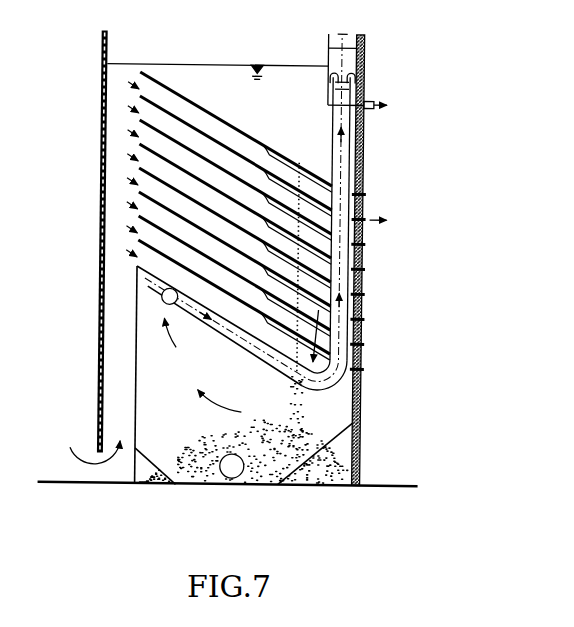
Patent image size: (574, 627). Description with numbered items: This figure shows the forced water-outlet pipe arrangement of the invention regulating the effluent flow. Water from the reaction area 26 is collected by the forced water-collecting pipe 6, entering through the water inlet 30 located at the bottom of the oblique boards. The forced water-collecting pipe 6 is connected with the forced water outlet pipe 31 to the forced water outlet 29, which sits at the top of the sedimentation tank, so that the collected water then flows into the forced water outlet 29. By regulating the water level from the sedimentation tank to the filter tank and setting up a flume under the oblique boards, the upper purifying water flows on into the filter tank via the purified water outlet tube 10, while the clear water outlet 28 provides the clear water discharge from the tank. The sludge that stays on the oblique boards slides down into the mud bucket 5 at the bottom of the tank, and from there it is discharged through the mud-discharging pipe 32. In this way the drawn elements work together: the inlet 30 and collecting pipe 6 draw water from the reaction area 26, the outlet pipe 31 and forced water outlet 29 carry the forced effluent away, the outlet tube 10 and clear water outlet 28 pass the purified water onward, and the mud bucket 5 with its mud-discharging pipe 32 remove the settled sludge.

The reaction area 26 is at (77, 241).
The mud bucket 5 is at (385, 260).
The forced water outlet 29 is at (392, 74).
The clear water outlet 28 is at (392, 192).
The purified water outlet tube 10 is at (281, 211).
The forced water-collecting pipe 6 is at (224, 326).
The water inlet 30 is at (140, 306).
The forced water outlet pipe 31 is at (119, 481).
The mud-discharging pipe 32 is at (316, 489).